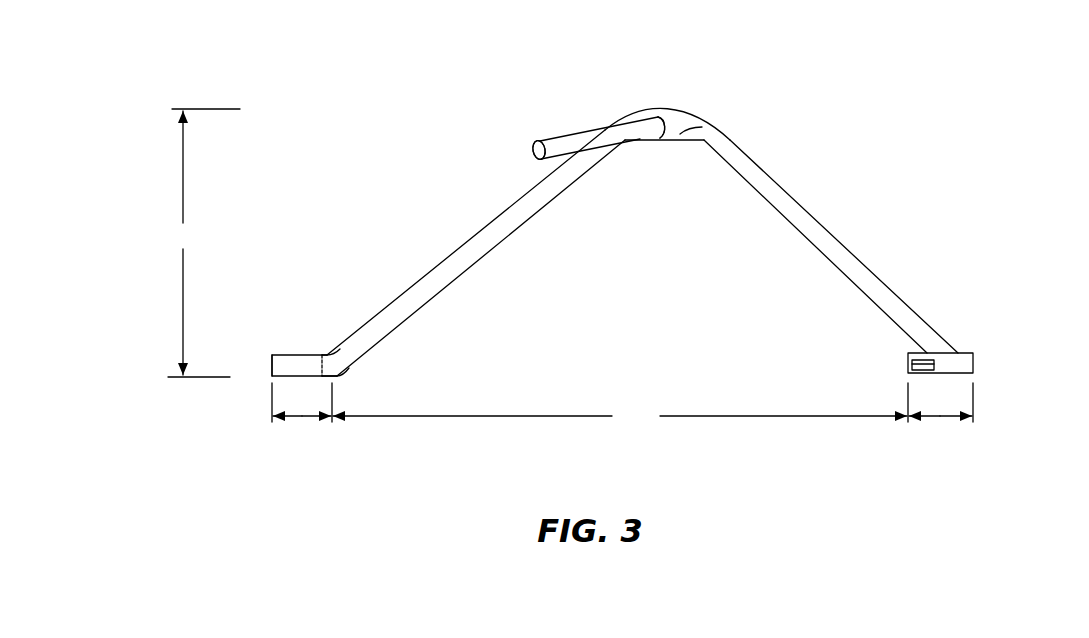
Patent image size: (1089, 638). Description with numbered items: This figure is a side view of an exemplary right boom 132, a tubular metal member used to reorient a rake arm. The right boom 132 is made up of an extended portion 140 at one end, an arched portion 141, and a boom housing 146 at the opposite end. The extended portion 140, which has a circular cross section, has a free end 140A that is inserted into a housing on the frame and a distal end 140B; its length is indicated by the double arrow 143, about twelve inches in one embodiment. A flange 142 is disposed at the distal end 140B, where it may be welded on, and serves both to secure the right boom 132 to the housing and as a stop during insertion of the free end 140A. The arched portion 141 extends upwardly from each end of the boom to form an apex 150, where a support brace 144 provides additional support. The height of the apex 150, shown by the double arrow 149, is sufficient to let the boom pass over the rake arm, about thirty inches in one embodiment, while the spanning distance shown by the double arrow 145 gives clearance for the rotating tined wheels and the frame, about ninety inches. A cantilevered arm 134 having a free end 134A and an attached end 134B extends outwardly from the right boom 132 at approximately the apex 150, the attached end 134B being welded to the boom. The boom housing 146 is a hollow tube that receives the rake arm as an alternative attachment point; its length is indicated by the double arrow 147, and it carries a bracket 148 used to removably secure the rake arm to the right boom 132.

The right boom 132 is at (807, 227).
The cantilevered arm 134 is at (591, 134).
The free end 134A is at (537, 142).
The attached end 134B is at (664, 116).
The extended portion 140 is at (283, 363).
The free end 140A is at (272, 357).
The distal end 140B is at (338, 353).
The arched portion 141 is at (460, 264).
The flange 142 is at (322, 353).
The length of the extended portion 143 is at (300, 418).
The support brace 144 is at (694, 124).
The spanning distance of the arched portion 145 is at (620, 419).
The boom housing 146 is at (974, 362).
The length of the boom housing 147 is at (935, 418).
The bracket 148 is at (934, 362).
The height of the apex 149 is at (202, 243).
The apex 150 is at (647, 106).